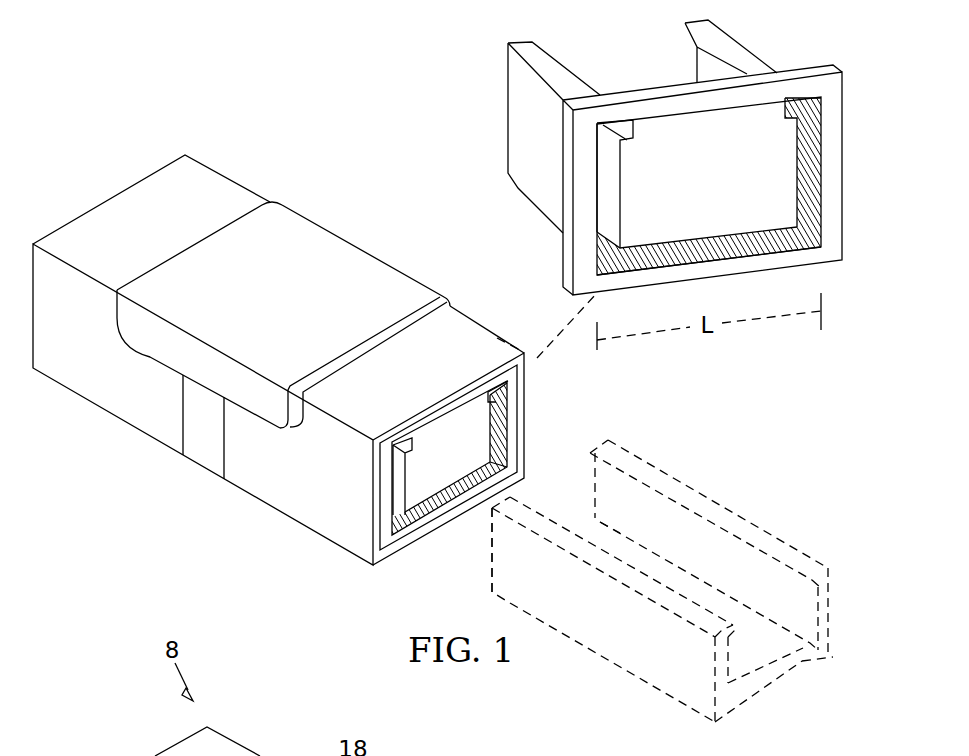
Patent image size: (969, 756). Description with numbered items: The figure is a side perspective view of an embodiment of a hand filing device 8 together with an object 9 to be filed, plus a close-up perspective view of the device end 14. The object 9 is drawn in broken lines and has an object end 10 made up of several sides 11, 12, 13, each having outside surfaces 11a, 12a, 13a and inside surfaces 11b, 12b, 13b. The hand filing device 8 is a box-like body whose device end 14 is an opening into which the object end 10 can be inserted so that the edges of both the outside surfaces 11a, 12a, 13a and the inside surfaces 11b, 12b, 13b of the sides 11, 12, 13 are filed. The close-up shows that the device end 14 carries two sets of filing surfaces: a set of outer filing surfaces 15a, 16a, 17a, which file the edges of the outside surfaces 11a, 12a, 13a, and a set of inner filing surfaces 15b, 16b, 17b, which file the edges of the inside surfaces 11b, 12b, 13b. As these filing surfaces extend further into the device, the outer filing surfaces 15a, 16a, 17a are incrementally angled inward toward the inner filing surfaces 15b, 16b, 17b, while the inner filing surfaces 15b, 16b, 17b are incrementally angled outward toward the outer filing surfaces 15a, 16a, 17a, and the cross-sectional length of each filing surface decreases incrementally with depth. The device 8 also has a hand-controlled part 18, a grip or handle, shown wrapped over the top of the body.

The hand filing device 8 is at (164, 117).
The object 9 is at (670, 588).
The object end 10 is at (667, 477).
The side 11 is at (746, 554).
The outside surface 11a is at (830, 628).
The inside surface 11b is at (817, 608).
The side 12 is at (667, 616).
The outside surface 12a is at (752, 702).
The inside surface 12b is at (810, 665).
The side 13 is at (608, 621).
The outside surface 13a is at (680, 690).
The inside surface 13b is at (727, 678).
The device end 14 is at (508, 420).
The outer filing surface 15a is at (828, 177).
The inner filing surface 15b is at (797, 154).
The outer filing surface 16a is at (740, 255).
The inner filing surface 16b is at (700, 238).
The outer filing surface 17a is at (600, 232).
The inner filing surface 17b is at (620, 160).
The hand-controlled part 18 is at (318, 245).